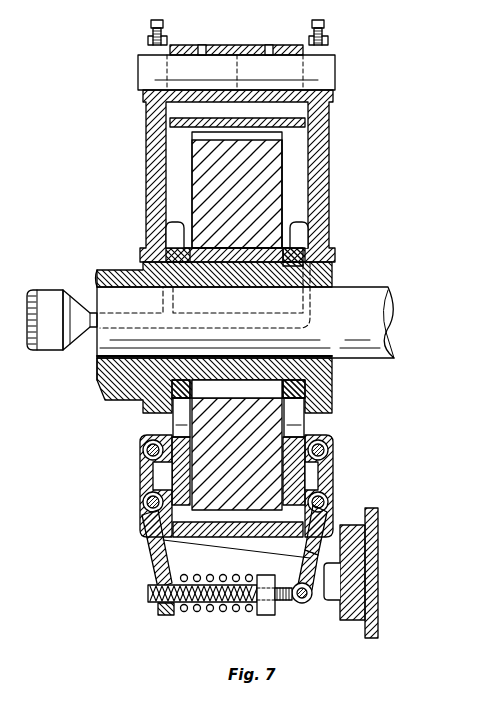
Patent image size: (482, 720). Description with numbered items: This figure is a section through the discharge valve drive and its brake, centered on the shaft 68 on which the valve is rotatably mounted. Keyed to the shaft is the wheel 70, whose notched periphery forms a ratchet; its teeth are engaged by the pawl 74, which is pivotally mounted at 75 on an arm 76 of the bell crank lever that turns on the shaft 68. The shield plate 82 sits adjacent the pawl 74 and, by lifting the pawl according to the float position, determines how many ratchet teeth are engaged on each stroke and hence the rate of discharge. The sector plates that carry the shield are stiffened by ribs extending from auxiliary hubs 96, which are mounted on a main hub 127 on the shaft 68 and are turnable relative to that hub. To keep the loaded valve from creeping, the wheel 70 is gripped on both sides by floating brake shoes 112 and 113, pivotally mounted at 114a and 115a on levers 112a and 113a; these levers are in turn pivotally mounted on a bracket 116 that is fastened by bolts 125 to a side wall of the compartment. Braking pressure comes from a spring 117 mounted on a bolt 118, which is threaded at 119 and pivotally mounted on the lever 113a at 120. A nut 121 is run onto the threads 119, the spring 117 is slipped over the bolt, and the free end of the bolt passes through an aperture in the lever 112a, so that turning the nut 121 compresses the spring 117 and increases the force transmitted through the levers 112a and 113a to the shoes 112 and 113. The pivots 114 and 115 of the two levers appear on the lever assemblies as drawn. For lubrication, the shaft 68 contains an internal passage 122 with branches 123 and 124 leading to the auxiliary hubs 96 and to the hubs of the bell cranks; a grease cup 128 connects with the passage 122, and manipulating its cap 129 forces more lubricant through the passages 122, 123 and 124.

The shaft 68 is at (375, 297).
The wheel 70 is at (275, 170).
The pawl 74 is at (283, 47).
The pivot mounting of pawl 75 is at (325, 73).
The arm 76 is at (155, 152).
The shield plate 82 is at (177, 118).
The auxiliary hubs 96 is at (175, 222).
The floating brake shoe 112 is at (172, 478).
The lever 112a is at (150, 526).
The floating brake shoe 113 is at (303, 478).
The lever 113a is at (368, 512).
The left lower pivot roller 114 is at (143, 503).
The pivotal mounting of brake shoe 114a is at (143, 448).
The right lower pivot roller 115 is at (332, 502).
The pivotal mounting of brake shoe 115a is at (333, 448).
The bracket 116 is at (372, 553).
The spring 117 is at (205, 610).
The bolt 118 is at (262, 614).
The threads 119 is at (148, 600).
The pivotal mounting of bolt 120 is at (312, 600).
The nut 121 is at (301, 604).
The internal passage 122 is at (143, 328).
The branch 123 is at (165, 290).
The branch 124 is at (305, 270).
The bolts 125 is at (348, 583).
The main hub 127 is at (290, 210).
The grease cup 128 is at (65, 280).
The cap 129 is at (47, 340).